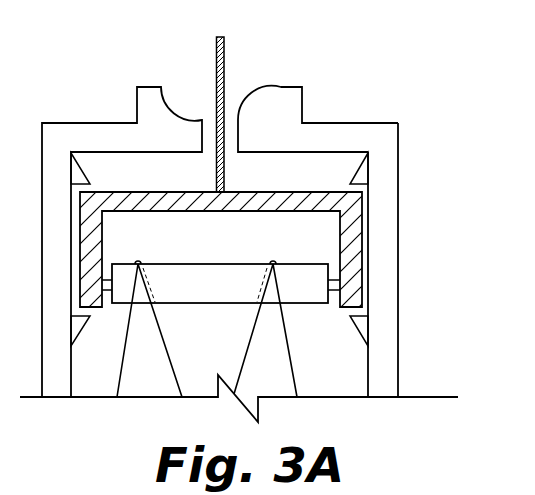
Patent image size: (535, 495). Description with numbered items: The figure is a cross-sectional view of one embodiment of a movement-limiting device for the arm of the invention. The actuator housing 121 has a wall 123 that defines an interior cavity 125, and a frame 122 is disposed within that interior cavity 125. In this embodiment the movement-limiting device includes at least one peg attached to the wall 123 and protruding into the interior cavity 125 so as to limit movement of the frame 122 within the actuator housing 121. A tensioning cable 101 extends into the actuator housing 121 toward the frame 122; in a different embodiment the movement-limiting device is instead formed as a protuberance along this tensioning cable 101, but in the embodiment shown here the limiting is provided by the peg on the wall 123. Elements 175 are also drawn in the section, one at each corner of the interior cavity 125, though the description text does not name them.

The tensioning cable 101 is at (216, 78).
The actuator housing 121 is at (368, 116).
The frame 122 is at (347, 222).
The wall 123 is at (383, 253).
The interior cavity 125 is at (307, 165).
The wedge / stop 175 is at (361, 174).